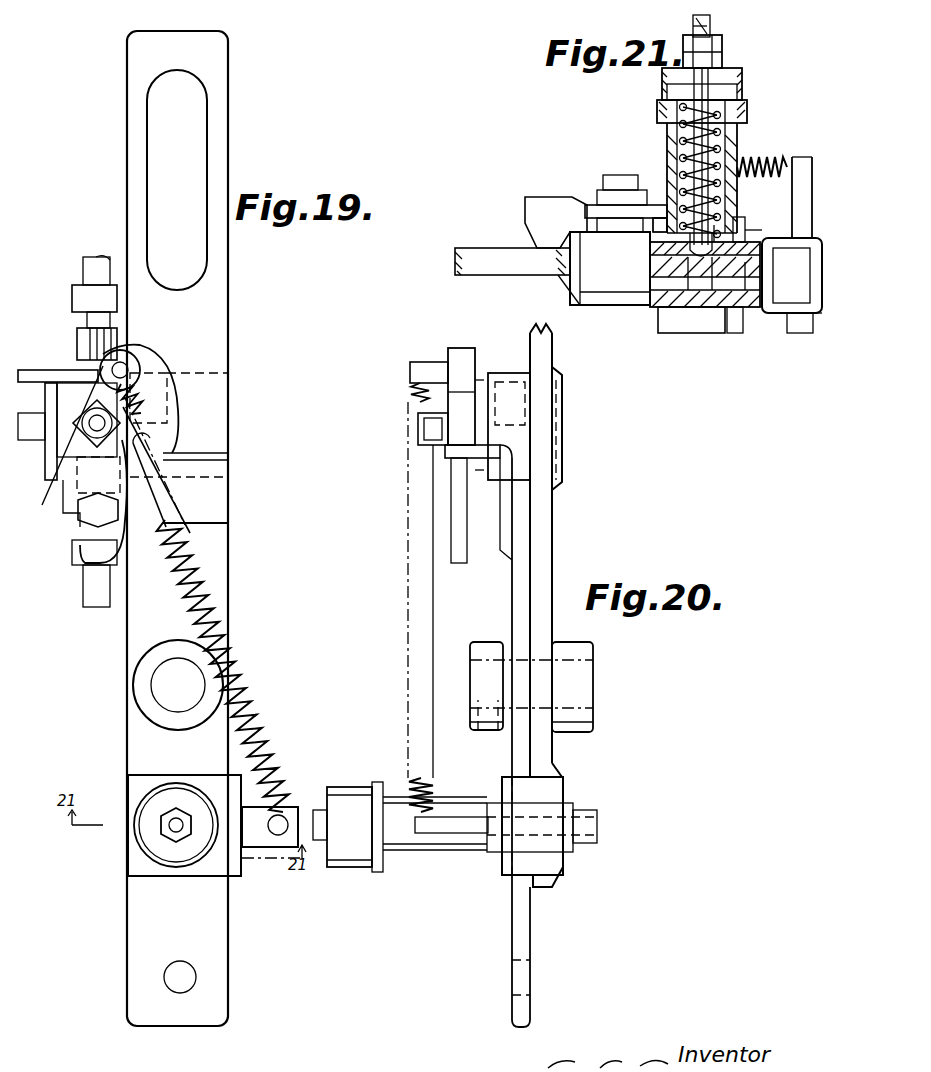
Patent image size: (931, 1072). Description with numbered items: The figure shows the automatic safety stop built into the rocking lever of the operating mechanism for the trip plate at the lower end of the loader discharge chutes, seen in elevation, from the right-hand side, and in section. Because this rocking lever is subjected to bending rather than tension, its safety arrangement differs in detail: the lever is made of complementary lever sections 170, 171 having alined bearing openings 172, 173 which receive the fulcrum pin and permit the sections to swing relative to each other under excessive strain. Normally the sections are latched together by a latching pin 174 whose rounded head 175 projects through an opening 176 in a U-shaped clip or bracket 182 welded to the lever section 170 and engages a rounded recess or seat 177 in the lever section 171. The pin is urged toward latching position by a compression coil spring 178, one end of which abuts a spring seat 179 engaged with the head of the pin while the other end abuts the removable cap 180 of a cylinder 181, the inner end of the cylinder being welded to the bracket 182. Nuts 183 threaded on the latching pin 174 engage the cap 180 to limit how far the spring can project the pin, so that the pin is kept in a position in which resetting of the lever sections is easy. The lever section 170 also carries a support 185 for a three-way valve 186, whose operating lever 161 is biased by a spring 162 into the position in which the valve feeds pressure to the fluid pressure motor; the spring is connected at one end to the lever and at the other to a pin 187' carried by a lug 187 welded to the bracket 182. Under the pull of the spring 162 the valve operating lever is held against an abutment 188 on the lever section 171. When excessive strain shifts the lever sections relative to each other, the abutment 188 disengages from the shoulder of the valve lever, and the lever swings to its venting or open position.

In FIG. 19, the operating lever 161 is at (150, 372).
In FIG. 19, the spring 162 is at (210, 582).
In FIG. 19, the lever section 170 is at (229, 322).
In FIG. 20, the lever section 170 is at (548, 562).
In FIG. 21, the lever section 170 is at (673, 300).
In FIG. 20, the lever section 171 is at (518, 594).
In FIG. 21, the lever section 171 is at (742, 300).
In FIG. 20, the bearing opening 172 is at (575, 686).
In FIG. 21, the bearing opening 172 is at (740, 335).
In FIG. 19, the bearing opening 173 is at (140, 677).
In FIG. 20, the bearing opening 173 is at (490, 720).
In FIG. 19, the latching pin 174 is at (176, 825).
In FIG. 21, the latching pin 174 is at (708, 140).
In FIG. 21, the rounded head 175 is at (660, 296).
In FIG. 21, the opening 176 is at (742, 225).
In FIG. 21, the rounded recess or seat 177 is at (688, 312).
In FIG. 21, the compression coil spring 178 is at (680, 135).
In FIG. 21, the spring seat 179 is at (730, 215).
In FIG. 19, the removable cap 180 is at (188, 853).
In FIG. 20, the removable cap 180 is at (343, 853).
In FIG. 21, the removable cap 180 is at (662, 90).
In FIG. 20, the cylinder 181 is at (417, 850).
In FIG. 21, the cylinder 181 is at (667, 145).
In FIG. 20, the U-shaped clip or bracket 182 is at (433, 787).
In FIG. 21, the U-shaped clip or bracket 182 is at (772, 160).
In FIG. 21, the nuts 183 is at (722, 46).
In FIG. 19, the support 185 is at (45, 372).
In FIG. 19, the three-way valve 186 is at (72, 486).
In FIG. 20, the three-way valve 186 is at (435, 442).
In FIG. 21, the three-way valve 186 is at (603, 300).
In FIG. 19, the lug 187 is at (280, 794).
In FIG. 20, the lug 187 is at (571, 822).
In FIG. 21, the lug 187 is at (804, 380).
In FIG. 20, the pin 187' is at (451, 865).
In FIG. 21, the pin 187' is at (767, 227).
In FIG. 20, the abutment 188 is at (463, 449).